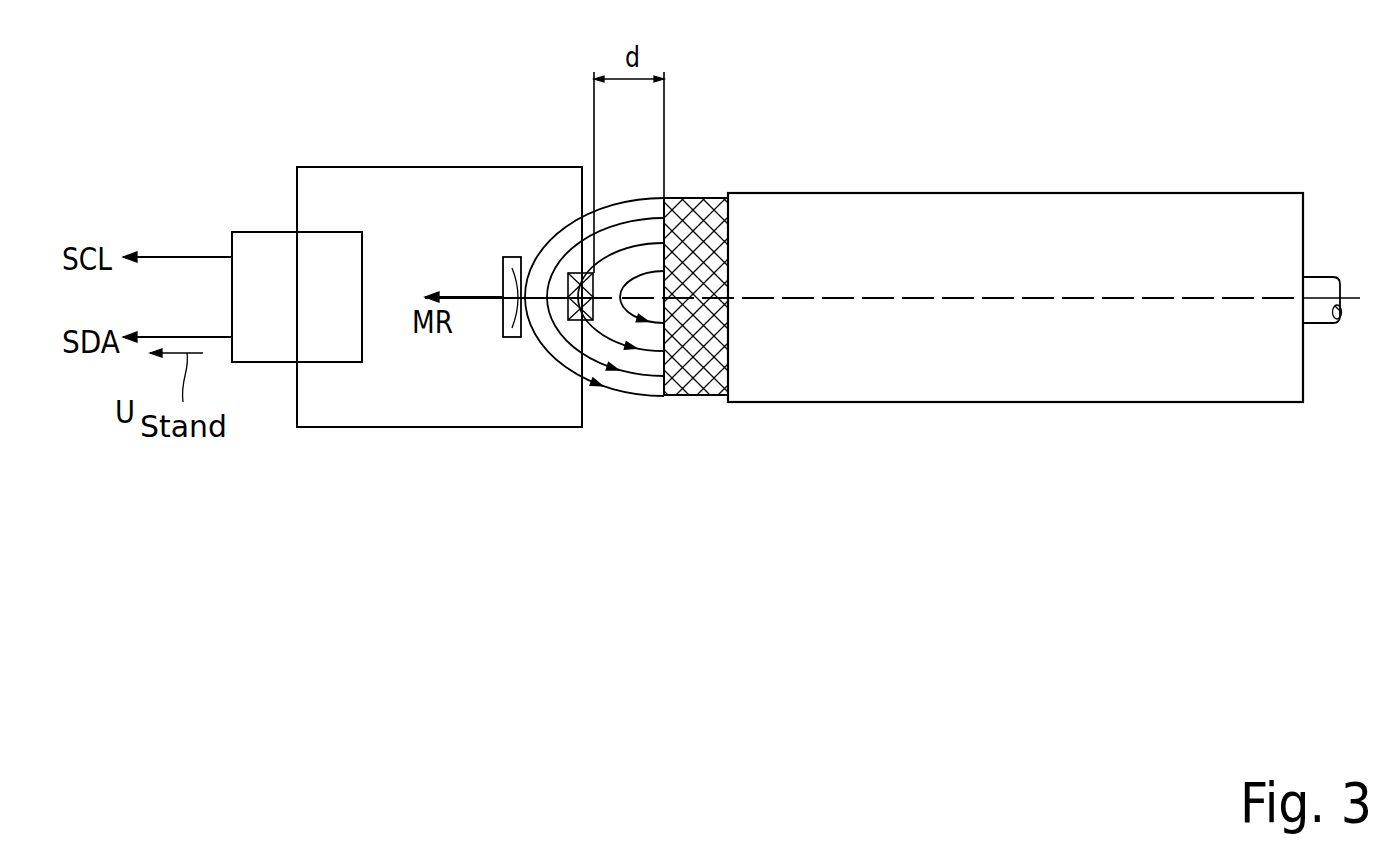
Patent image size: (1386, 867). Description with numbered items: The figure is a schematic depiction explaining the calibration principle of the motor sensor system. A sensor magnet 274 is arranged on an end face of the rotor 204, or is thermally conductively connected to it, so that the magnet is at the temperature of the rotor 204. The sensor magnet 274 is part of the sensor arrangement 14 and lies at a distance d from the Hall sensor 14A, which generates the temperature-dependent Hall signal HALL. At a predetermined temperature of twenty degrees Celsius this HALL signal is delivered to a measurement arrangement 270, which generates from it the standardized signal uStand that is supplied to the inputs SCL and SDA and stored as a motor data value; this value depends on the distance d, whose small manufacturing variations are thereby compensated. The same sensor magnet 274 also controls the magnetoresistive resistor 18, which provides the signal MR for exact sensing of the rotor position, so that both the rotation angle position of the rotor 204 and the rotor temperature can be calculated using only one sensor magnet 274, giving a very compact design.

The measurement arrangement 270 is at (270, 253).
The sensor arrangement 14 is at (584, 148).
The magnetoresistive resistor 18 is at (503, 270).
The Hall sensor 14A is at (548, 335).
The sensor magnet 274 is at (705, 212).
The rotor 204 is at (1197, 377).